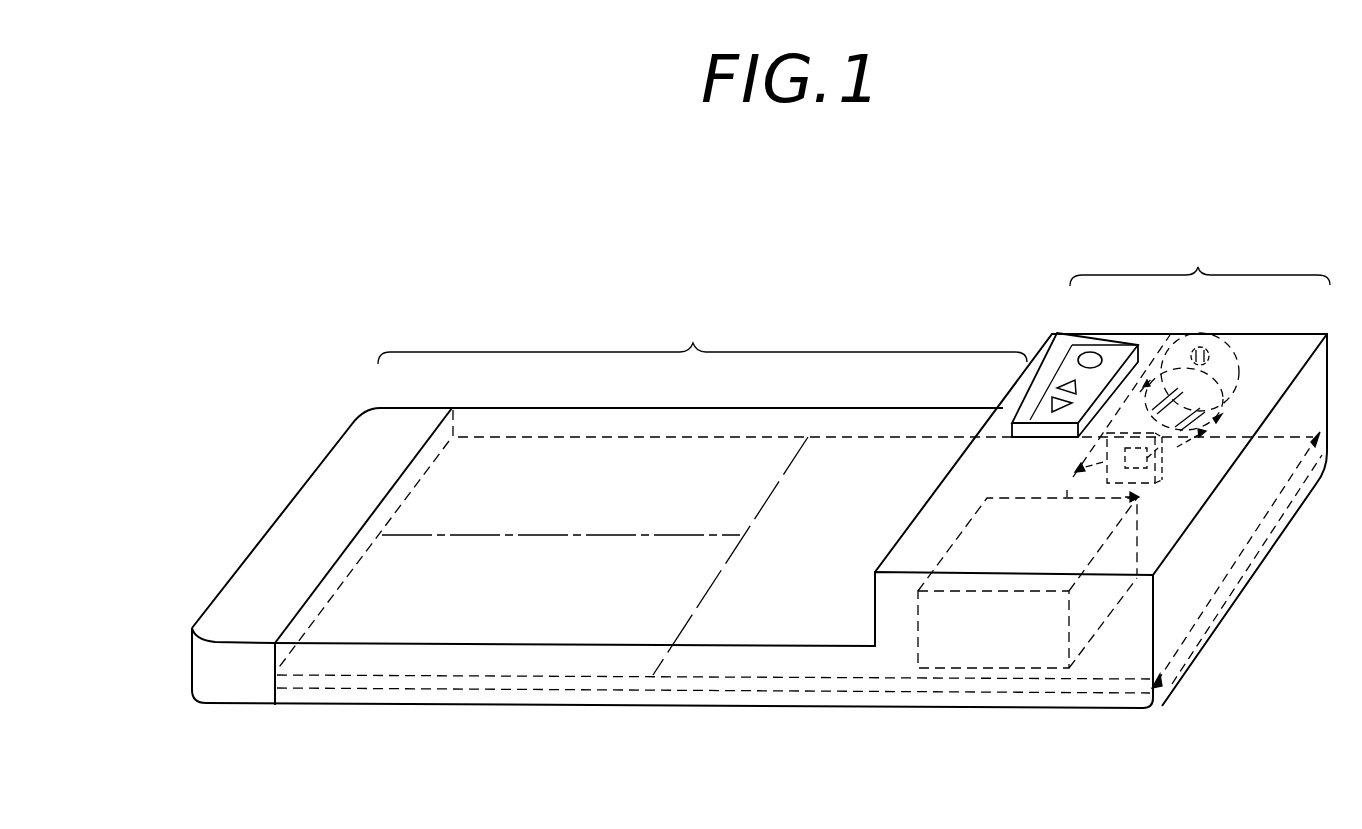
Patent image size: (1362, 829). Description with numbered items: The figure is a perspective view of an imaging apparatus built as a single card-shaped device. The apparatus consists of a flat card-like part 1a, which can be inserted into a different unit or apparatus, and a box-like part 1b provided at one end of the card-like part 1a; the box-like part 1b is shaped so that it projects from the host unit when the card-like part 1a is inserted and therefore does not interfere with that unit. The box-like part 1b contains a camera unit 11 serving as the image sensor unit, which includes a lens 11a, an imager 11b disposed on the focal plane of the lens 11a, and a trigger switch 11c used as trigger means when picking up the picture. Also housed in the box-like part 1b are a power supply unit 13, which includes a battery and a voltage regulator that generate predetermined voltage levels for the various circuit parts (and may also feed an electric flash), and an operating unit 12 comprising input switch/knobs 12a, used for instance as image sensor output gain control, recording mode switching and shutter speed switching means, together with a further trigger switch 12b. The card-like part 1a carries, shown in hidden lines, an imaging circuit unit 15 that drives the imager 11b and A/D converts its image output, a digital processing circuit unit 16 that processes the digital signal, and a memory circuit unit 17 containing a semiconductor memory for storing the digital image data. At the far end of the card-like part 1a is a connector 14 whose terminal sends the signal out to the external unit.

The card-like part 1a is at (702, 336).
The box-like part 1b is at (1200, 259).
The camera unit 11 is at (1240, 380).
The lens 11a is at (1232, 420).
The imager 11b is at (1159, 487).
The trigger switch 11c is at (1219, 326).
The operating unit 12 is at (1091, 379).
The input switch/knobs 12a is at (1052, 405).
The trigger switch 12b is at (1094, 352).
The power supply unit 13 is at (1093, 612).
The connector 14 is at (354, 447).
The imaging circuit unit 15 is at (840, 458).
The digital processing circuit unit 16 is at (525, 458).
The memory circuit unit 17 is at (363, 592).